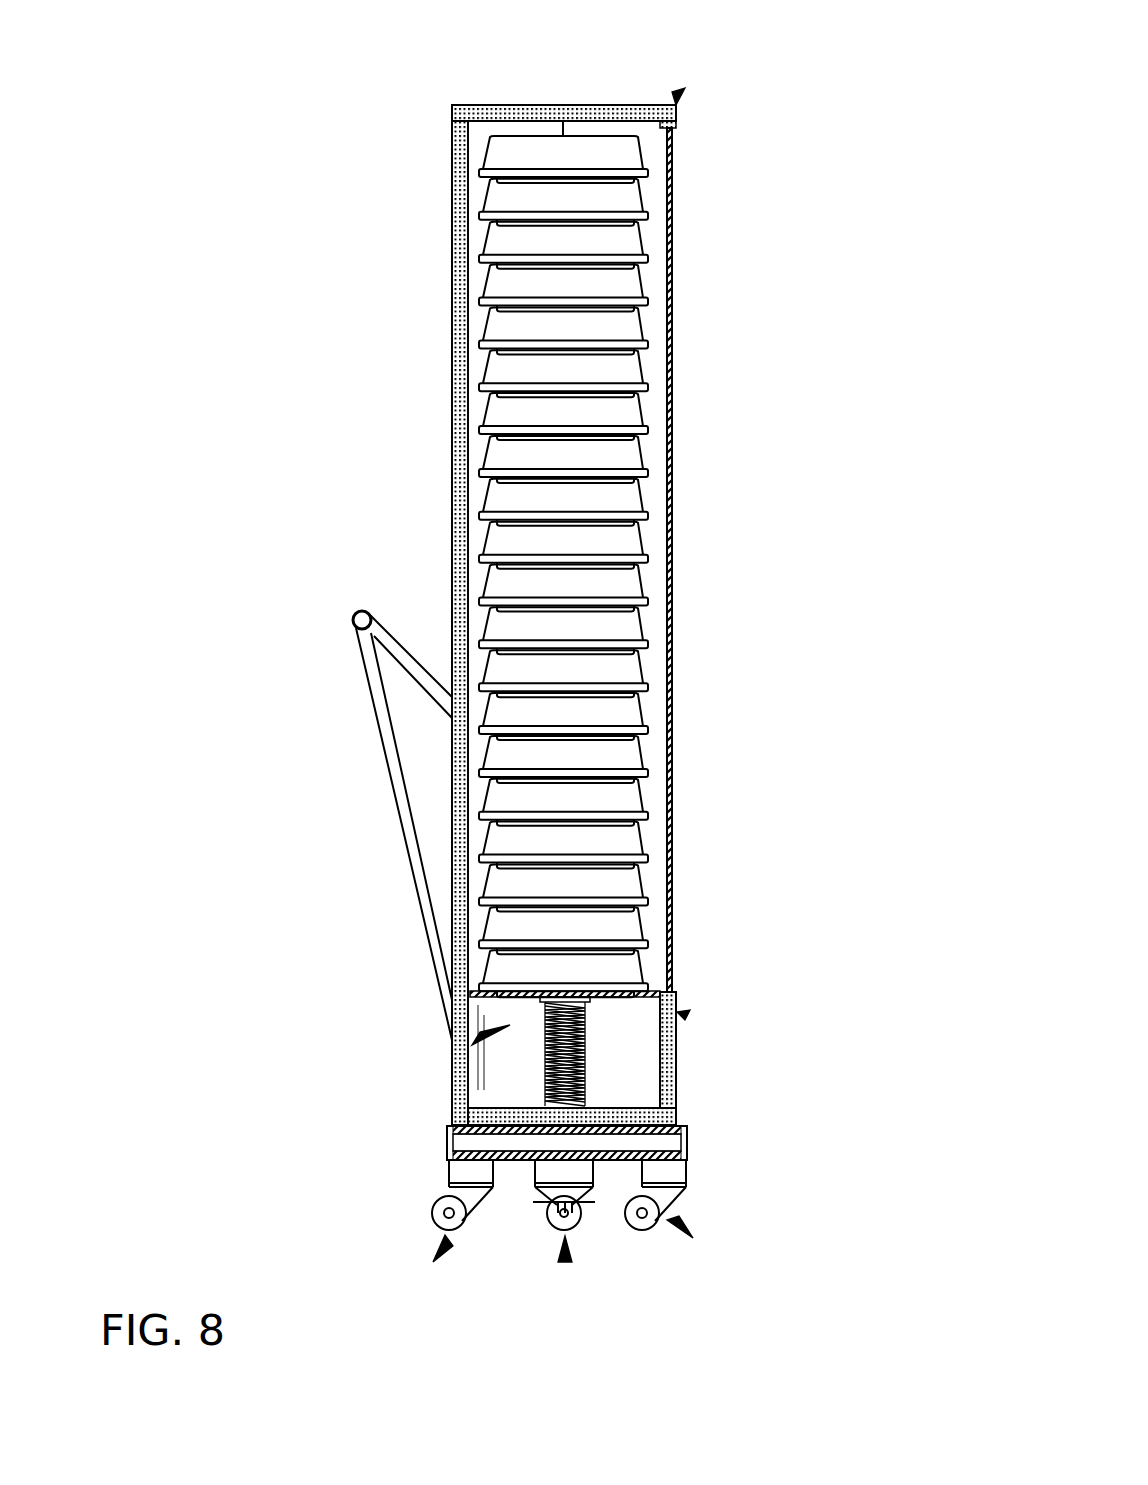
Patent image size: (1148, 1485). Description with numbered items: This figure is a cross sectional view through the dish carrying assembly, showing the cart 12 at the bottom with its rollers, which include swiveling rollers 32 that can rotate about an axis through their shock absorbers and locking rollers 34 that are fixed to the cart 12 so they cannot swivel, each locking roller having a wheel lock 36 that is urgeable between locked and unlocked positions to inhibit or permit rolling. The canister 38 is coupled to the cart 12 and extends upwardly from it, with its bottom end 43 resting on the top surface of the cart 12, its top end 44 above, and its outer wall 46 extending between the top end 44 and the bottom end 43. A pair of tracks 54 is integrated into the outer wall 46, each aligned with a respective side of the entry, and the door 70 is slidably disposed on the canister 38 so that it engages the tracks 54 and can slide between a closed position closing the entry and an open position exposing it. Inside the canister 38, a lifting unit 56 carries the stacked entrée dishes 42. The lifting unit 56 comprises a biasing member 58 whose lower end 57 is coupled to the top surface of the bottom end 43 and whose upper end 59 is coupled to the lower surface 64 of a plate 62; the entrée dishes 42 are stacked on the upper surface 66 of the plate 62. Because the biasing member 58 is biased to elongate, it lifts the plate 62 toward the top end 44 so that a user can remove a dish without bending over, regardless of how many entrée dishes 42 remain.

The cart 12 is at (604, 701).
The swiveling rollers 32 is at (440, 1250).
The locking rollers 34 is at (534, 1270).
The wheel lock 36 is at (535, 1200).
The canister 38 is at (499, 573).
The entrée dishes 42 is at (640, 152).
The bottom end 43 is at (450, 1150).
The top end 44 is at (576, 105).
The outer wall 46 is at (452, 427).
The tracks 54 is at (683, 92).
The lifting unit 56 is at (478, 1041).
The lower end 57 is at (565, 1112).
The biasing member 58 is at (553, 1068).
The upper end 59 is at (567, 998).
The plate 62 is at (470, 990).
The lower surface 64 is at (612, 1000).
The upper surface 66 is at (512, 990).
The door 70 is at (668, 553).